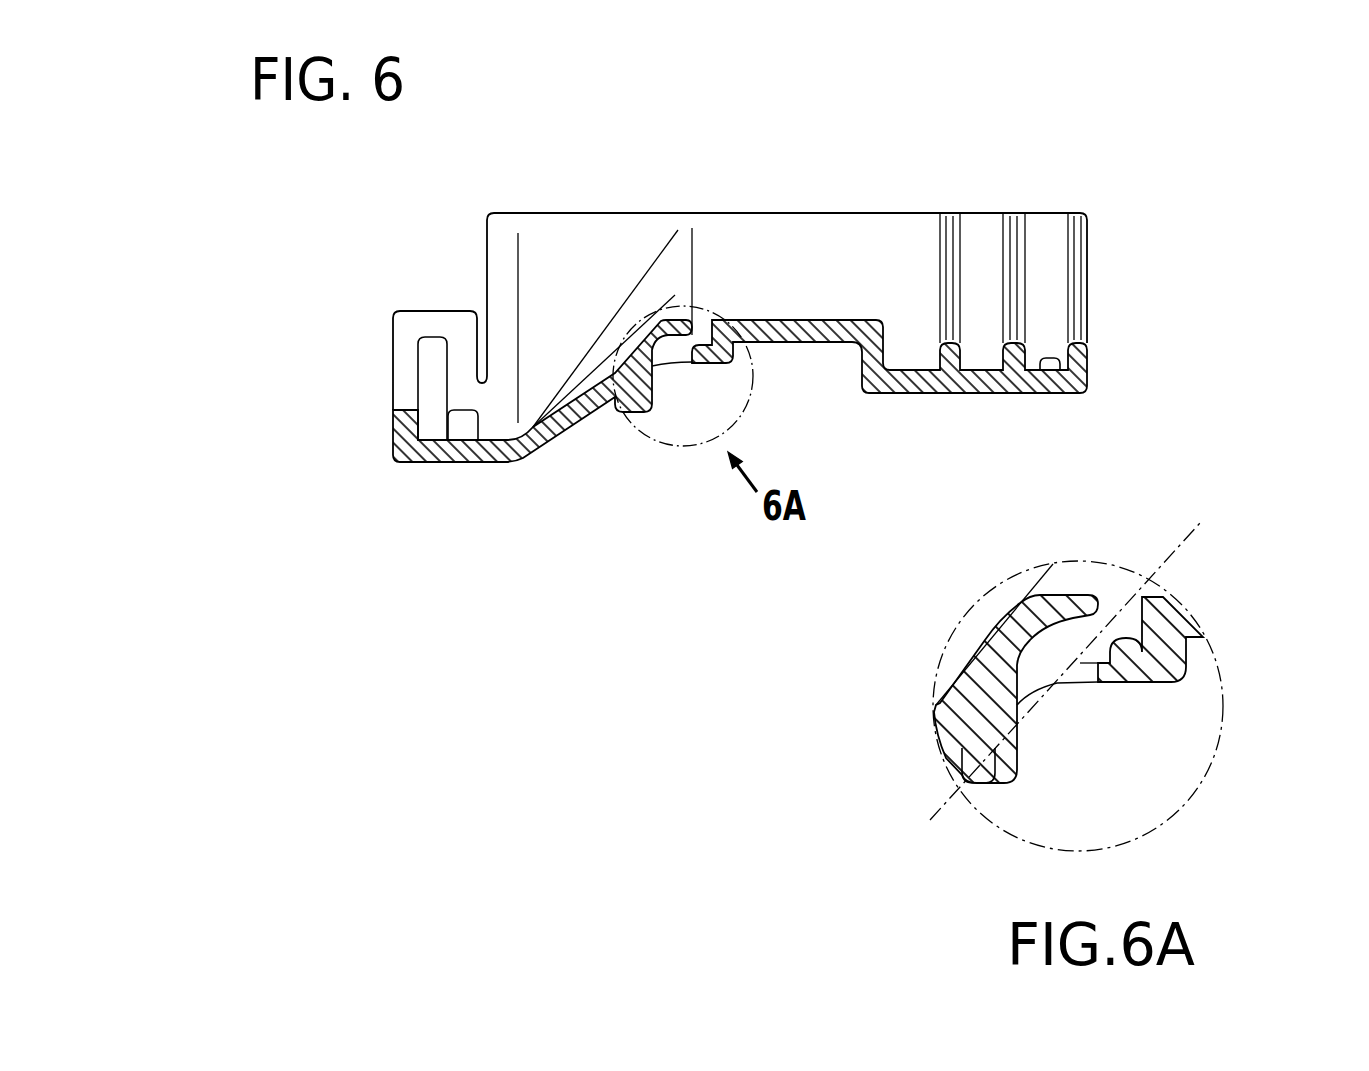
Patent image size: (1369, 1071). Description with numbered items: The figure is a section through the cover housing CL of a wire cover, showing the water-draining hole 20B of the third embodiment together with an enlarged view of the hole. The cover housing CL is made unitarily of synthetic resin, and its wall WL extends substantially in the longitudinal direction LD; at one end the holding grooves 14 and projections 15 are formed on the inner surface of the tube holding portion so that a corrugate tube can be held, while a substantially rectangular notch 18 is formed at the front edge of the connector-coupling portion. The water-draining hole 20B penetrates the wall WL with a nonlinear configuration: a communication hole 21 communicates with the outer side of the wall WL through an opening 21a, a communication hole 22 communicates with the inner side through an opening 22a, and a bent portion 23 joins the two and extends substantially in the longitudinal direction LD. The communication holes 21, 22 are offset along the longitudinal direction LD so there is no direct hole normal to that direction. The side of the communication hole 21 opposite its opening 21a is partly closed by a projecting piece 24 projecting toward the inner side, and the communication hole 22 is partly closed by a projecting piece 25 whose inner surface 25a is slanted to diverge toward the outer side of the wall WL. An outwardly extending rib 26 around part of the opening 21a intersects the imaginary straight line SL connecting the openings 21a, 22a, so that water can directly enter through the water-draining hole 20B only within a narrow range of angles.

In FIG. 6, the holding groove 14 is at (1088, 392).
In FIG. 6, the projection 15 is at (1020, 343).
In FIG. 6, the notch 18 is at (432, 363).
In FIG. 6, the water-draining hole 20B is at (672, 377).
In FIG. 6A, the water-draining hole 20B is at (1080, 797).
In FIG. 6A, the communication hole 21 is at (1077, 690).
In FIG. 6A, the opening 21a is at (1063, 688).
In FIG. 6A, the communication hole 22 is at (1148, 597).
In FIG. 6A, the opening 22a is at (1138, 610).
In FIG. 6A, the bent portion 23 is at (1112, 604).
In FIG. 6A, the projecting piece 24 is at (1081, 597).
In FIG. 6A, the projecting piece 25 is at (1120, 684).
In FIG. 6A, the inner surface 25a is at (1170, 684).
In FIG. 6A, the rib 26 is at (995, 782).
In FIG. 6, the longitudinal direction LD is at (748, 162).
In FIG. 6, the cover housing CL is at (978, 200).
In FIG. 6, the wall WL is at (795, 343).
In FIG. 6A, the wall WL is at (1187, 641).
In FIG. 6A, the imaginary straight line SL is at (960, 786).